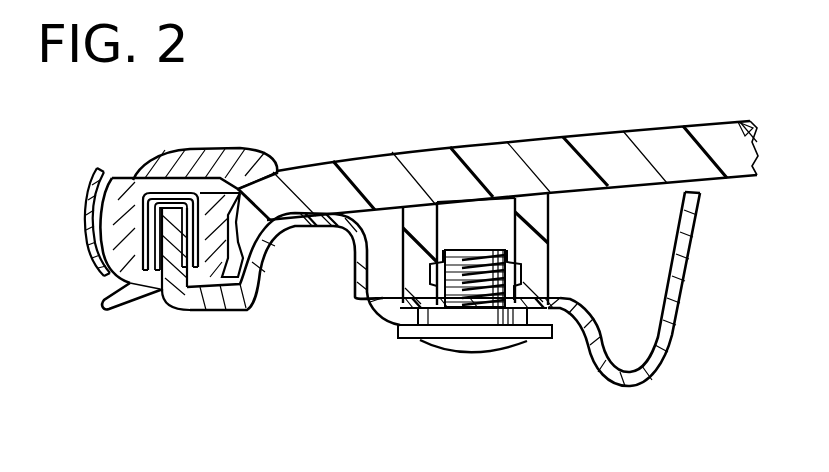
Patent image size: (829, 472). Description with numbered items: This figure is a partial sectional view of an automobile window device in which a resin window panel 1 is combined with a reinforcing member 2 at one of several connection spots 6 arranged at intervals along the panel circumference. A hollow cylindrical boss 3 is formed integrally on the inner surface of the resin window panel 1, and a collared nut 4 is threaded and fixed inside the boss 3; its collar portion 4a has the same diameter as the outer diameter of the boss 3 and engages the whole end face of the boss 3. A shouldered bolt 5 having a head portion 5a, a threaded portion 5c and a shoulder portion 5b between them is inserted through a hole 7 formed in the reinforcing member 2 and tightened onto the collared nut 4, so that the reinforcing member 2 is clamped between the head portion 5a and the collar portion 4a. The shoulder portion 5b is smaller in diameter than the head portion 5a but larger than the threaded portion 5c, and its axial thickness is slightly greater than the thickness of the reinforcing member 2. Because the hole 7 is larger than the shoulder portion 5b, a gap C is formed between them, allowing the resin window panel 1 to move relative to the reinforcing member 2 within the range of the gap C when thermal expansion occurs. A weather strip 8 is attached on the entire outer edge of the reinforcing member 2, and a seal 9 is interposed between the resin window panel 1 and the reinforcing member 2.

The resin window panel 1 is at (648, 134).
The reinforcing member 2 is at (640, 384).
The hollow cylindrical boss 3 is at (533, 252).
The collared nut 4 is at (518, 273).
The collar portion 4a is at (378, 311).
The shouldered bolt 5 is at (473, 343).
The head portion 5a is at (515, 334).
The shoulder portion 5b is at (480, 314).
The threaded portion 5c is at (471, 253).
The connection spot 6 is at (438, 354).
The hole 7 is at (535, 328).
The weather strip 8 is at (208, 150).
The seal 9 is at (315, 214).
The gap C is at (425, 321).